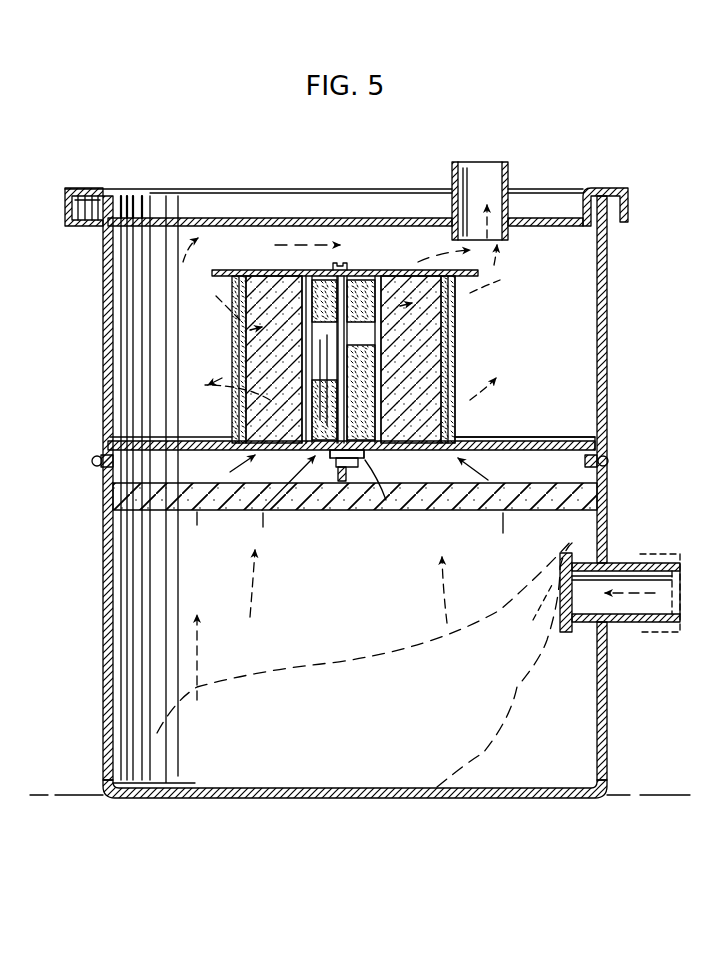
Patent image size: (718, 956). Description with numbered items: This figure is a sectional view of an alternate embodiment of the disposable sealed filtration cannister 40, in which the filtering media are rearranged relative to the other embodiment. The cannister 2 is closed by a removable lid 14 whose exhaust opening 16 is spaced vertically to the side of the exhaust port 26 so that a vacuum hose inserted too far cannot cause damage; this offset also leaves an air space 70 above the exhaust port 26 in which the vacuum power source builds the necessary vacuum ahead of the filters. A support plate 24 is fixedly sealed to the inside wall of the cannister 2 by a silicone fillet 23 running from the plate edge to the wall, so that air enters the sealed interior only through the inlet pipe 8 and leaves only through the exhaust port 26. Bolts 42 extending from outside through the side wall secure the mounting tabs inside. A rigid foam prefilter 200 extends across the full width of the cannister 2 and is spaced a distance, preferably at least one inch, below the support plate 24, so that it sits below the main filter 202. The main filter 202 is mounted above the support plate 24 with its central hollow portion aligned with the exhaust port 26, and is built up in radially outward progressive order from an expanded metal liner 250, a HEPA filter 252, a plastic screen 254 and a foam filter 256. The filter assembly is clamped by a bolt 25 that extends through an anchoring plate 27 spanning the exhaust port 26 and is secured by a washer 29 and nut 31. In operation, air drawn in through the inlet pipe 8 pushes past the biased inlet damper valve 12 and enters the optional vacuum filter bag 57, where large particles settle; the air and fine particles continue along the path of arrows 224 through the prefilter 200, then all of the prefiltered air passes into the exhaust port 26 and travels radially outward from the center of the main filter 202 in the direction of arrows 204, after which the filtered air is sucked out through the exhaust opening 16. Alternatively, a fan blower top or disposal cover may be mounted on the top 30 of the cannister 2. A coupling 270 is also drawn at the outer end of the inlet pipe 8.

The cannister 2 is at (103, 615).
The inlet pipe 8 is at (625, 563).
The inlet damper valve 12 is at (572, 636).
The lid 14 is at (553, 196).
The opening 16 is at (487, 172).
The silicone fillet 23 is at (603, 436).
The support plate 24 is at (592, 440).
The bolt 25 is at (350, 268).
The exhaust port 26 is at (368, 452).
The anchoring plate 27 is at (328, 454).
The washer 29 is at (364, 458).
The top 30 is at (606, 205).
The nut 31 is at (355, 470).
The sealed filtration cannister 40 is at (493, 804).
The bolts 42 is at (612, 460).
The vacuum filter bag 57 is at (493, 743).
The air space 70 is at (172, 248).
The rigid foam prefilter 200 is at (608, 495).
The main filter 202 is at (465, 370).
The arrows 204 is at (478, 418).
The arrows 224 is at (197, 657).
The expanded metal liner 250 is at (340, 378).
The HEPA filter 252 is at (292, 326).
The plastic screen 254 is at (456, 305).
The foam filter 256 is at (456, 336).
The coupling 270 is at (640, 598).